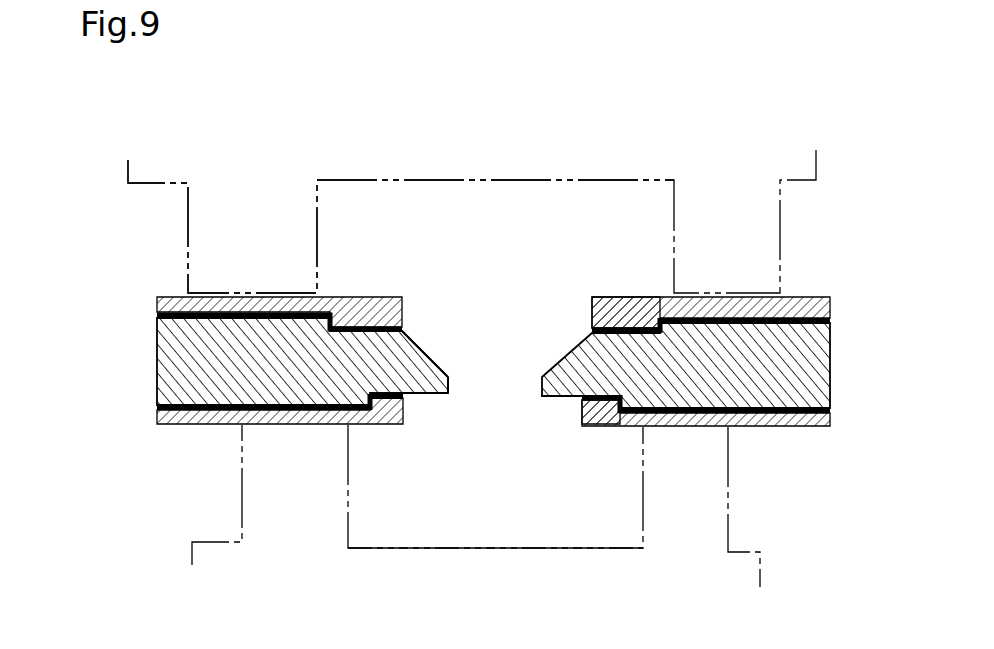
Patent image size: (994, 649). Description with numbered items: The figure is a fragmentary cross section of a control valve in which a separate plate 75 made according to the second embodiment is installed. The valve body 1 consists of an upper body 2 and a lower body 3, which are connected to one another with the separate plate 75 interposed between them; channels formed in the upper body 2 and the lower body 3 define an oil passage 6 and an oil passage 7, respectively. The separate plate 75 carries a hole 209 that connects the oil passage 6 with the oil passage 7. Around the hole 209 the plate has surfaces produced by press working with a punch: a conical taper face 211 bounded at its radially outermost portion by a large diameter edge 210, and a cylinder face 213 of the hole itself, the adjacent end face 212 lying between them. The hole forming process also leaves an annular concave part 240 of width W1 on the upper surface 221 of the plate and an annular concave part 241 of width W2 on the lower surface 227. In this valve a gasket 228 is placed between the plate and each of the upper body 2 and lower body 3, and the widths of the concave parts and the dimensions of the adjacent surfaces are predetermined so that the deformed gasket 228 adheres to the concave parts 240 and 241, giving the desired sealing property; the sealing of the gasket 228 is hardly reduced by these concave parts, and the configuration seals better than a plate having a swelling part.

The valve body 1 is at (578, 152).
The upper body 2 is at (188, 202).
The lower body 3 is at (240, 517).
The oil passage 6 is at (425, 207).
The oil passage 7 is at (583, 532).
The separate plate 75 is at (167, 380).
The hole 209 is at (525, 348).
The large diameter edge 210 is at (403, 328).
The taper face 211 is at (418, 347).
The end face 212 is at (447, 377).
The cylinder face 213 is at (450, 390).
The upper surface 221 is at (713, 300).
The lower surface 227 is at (750, 427).
The gasket 228 is at (277, 297).
The concave part 240 is at (633, 300).
The concave part 241 is at (563, 398).